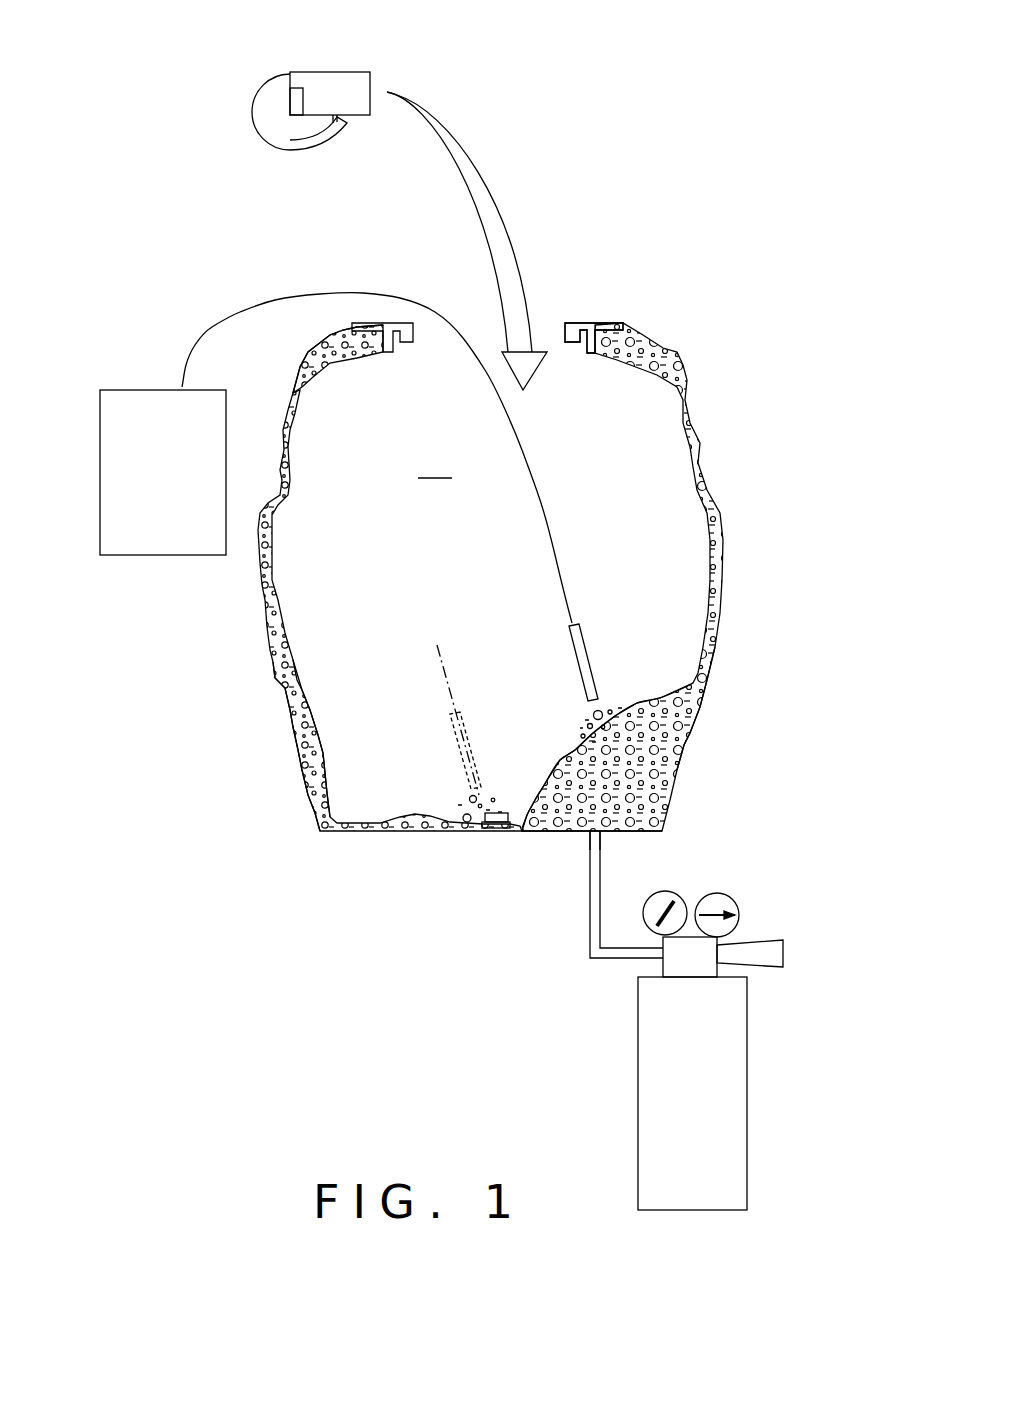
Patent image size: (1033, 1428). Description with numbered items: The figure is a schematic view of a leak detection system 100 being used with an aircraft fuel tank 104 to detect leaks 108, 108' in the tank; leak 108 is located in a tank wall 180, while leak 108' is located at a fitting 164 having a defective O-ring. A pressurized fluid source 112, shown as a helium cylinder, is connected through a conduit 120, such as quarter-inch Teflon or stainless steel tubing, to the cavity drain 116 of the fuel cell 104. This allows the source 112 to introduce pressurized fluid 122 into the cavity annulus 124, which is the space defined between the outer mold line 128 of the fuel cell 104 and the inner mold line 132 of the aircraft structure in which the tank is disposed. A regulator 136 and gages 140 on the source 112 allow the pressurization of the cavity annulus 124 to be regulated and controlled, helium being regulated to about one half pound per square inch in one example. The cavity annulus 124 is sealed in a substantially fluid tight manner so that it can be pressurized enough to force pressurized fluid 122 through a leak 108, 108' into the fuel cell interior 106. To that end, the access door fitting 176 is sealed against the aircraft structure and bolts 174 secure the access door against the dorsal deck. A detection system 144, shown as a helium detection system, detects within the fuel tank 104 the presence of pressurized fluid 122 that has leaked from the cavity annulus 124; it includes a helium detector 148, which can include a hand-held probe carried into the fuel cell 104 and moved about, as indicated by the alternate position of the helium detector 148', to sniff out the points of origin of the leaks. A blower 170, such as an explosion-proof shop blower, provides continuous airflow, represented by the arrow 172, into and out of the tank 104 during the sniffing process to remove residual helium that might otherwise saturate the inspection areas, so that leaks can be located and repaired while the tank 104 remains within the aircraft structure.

The system 100 is at (222, 222).
The aircraft fuel tank 104 is at (268, 650).
The fuel cell interior 106 is at (435, 464).
The leak 108 is at (618, 687).
The leak 108' is at (500, 785).
The pressurized fluid source 112 is at (637, 1053).
The cavity drain 116 is at (588, 834).
The conduit 120 is at (588, 922).
The pressurized fluid 122 is at (686, 742).
The cavity annulus 124 is at (322, 357).
The outer mold line 128 is at (325, 767).
The inner mold line 132 is at (300, 758).
The regulator 136 is at (760, 967).
The gages 140 is at (672, 890).
The detection system 144 is at (100, 472).
The helium detector 148 is at (605, 635).
The helium detector 148' is at (475, 720).
The fitting 164 is at (503, 833).
The blower 170 is at (329, 72).
The arrow 172 is at (510, 203).
The bolts 174 is at (400, 333).
The access door fitting 176 is at (597, 323).
The tank wall 180 is at (632, 710).